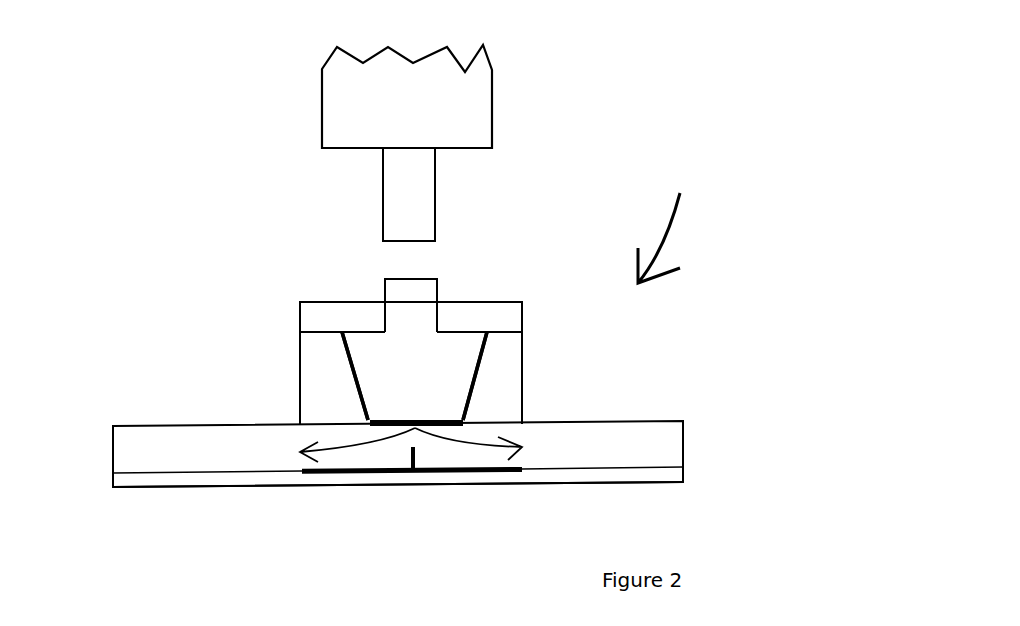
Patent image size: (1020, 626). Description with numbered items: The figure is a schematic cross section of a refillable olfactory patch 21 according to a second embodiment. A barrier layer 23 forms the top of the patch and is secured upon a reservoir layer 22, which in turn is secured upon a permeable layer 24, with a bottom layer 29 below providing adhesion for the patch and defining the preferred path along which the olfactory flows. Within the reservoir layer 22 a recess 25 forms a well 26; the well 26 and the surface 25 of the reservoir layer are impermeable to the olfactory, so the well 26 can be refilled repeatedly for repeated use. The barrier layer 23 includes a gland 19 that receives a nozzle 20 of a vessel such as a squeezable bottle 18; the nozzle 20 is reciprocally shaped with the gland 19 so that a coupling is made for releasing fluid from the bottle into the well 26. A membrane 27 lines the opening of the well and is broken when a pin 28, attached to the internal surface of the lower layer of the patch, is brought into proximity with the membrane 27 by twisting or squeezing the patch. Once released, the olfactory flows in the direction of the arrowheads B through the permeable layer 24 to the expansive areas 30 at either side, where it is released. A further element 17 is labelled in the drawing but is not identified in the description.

The workpiece 17 is at (172, 426).
The squeezable bottle 18 is at (407, 96).
The gland 19 is at (410, 292).
The nozzle 20 is at (407, 195).
The patch 21 is at (667, 223).
The reservoir layer 22 is at (505, 358).
The barrier layer 23 is at (468, 310).
The permeable layer 24 is at (608, 443).
The recess 25 is at (473, 383).
The well 26 is at (414, 379).
The membrane 27 is at (368, 412).
The pin 28 is at (411, 468).
The bottom layer 29 is at (624, 487).
The expansive areas 30 is at (145, 450).
The arrowheads B is at (363, 450).